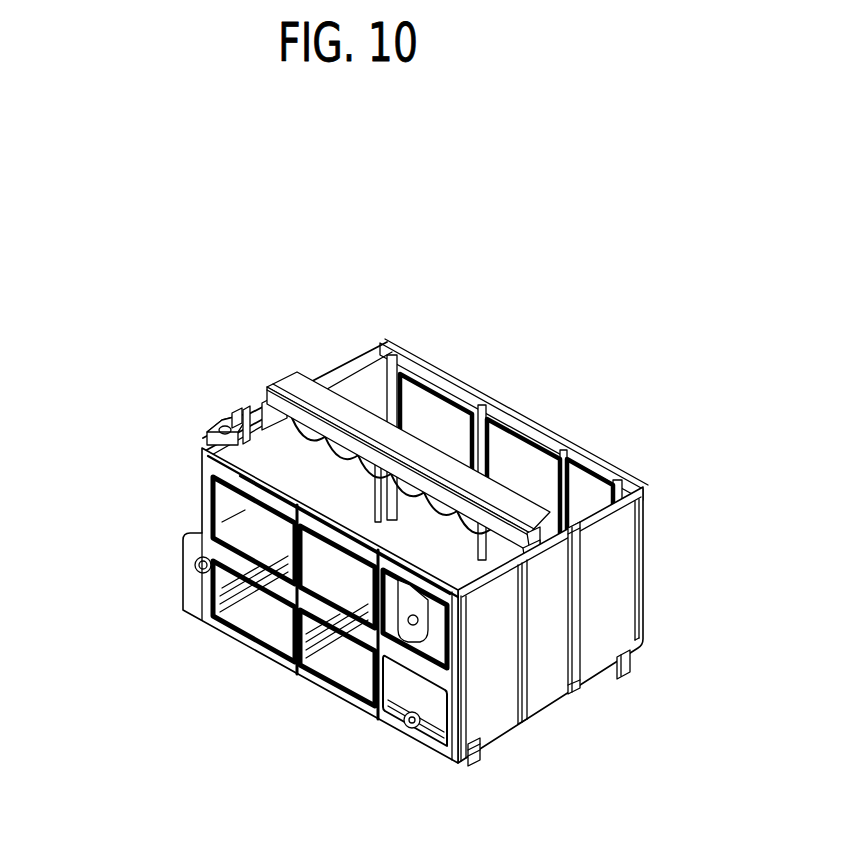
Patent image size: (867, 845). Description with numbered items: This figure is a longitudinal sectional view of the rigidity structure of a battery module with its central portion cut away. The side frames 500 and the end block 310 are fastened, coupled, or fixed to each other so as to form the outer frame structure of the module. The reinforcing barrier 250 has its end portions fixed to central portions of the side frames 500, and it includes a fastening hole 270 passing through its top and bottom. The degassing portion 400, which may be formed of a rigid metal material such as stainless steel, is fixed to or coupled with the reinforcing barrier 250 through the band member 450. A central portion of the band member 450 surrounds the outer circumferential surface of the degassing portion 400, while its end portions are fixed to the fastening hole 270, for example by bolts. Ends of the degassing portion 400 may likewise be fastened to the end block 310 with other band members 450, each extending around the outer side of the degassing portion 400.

The end block 310 is at (236, 517).
The degassing portion 400 is at (413, 450).
The band member 450 is at (584, 510).
The reinforcing barrier 250 is at (617, 612).
The fastening hole 270 is at (576, 639).
The side frame 500 is at (375, 700).